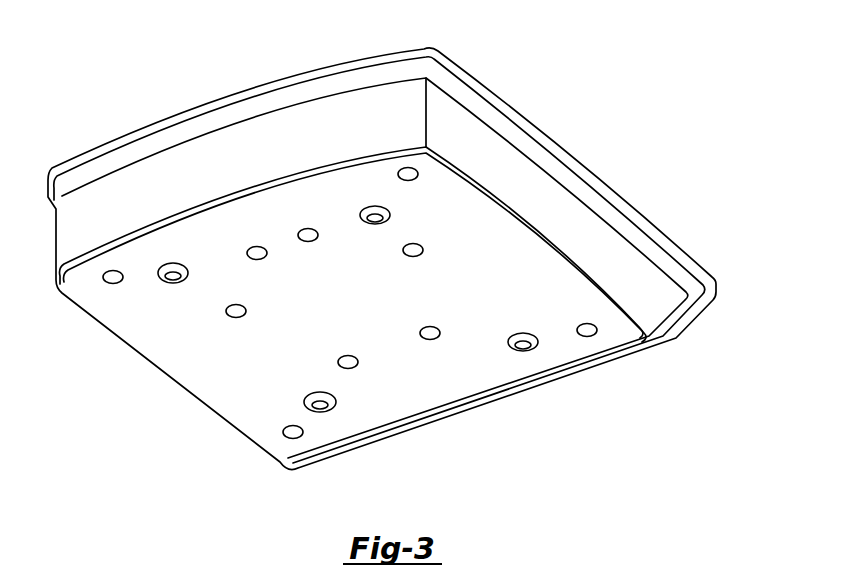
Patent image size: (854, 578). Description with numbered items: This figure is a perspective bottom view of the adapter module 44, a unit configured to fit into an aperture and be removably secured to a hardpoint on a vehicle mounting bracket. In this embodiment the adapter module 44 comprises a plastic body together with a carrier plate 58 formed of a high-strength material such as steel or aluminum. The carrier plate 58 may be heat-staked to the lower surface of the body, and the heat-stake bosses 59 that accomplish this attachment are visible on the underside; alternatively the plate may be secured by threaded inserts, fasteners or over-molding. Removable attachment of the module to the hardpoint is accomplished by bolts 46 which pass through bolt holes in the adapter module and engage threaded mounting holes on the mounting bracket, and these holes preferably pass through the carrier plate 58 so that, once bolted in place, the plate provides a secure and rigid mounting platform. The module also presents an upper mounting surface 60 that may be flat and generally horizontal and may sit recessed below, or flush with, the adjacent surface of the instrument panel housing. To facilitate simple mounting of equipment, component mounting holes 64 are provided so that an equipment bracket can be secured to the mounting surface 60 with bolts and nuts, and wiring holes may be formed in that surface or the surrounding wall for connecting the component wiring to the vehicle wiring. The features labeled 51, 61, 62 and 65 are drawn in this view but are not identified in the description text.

The adapter module 44 is at (176, 102).
The bolts 46 is at (106, 283).
The base plate 51 is at (327, 323).
The carrier plate 58 is at (375, 225).
The heat-stake bosses 59 is at (173, 284).
The upper mounting surface 60 is at (246, 313).
The aperture 61 is at (420, 333).
The apertures 62 is at (264, 258).
The component mounting holes 64 is at (358, 363).
The aperture 65 is at (413, 257).